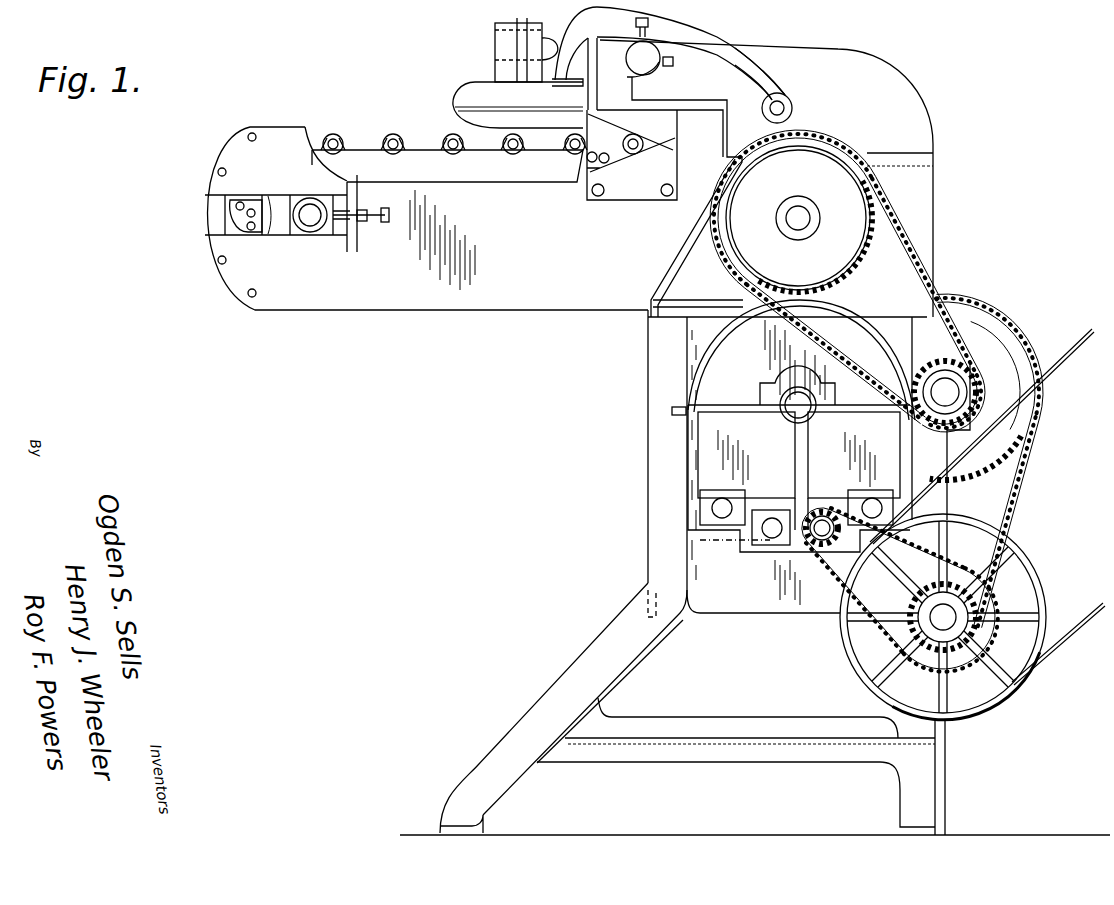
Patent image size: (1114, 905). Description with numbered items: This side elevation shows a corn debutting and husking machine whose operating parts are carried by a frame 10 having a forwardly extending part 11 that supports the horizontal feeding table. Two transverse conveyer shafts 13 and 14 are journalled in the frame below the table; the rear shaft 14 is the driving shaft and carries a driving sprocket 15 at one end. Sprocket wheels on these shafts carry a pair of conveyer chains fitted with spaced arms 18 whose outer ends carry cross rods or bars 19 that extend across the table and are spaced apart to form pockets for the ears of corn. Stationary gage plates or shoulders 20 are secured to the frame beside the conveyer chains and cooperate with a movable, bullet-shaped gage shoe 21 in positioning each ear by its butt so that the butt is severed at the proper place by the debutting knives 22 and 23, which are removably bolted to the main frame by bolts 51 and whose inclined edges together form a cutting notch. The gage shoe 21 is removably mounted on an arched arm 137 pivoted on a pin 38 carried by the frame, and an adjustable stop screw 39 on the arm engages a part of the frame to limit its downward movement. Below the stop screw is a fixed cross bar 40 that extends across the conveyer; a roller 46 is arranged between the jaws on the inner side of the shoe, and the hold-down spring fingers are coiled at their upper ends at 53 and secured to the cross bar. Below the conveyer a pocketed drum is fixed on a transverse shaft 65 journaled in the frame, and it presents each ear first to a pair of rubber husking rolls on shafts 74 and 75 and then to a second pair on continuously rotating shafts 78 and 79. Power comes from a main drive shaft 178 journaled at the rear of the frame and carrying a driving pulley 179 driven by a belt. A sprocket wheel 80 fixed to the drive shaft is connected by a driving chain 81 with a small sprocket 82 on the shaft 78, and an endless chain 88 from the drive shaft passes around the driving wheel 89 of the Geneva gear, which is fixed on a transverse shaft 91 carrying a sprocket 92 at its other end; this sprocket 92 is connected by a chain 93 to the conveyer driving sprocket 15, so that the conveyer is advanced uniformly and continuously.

The frame 10 is at (648, 357).
The forwardly extending part 11 is at (428, 218).
The conveyer shaft 13 is at (323, 226).
The conveyer shaft 14 is at (802, 217).
The driving sprocket 15 is at (799, 219).
The spaced arms 18 is at (450, 150).
The cross rods or bars 19 is at (455, 143).
The stationary gage plates 20 is at (447, 166).
The gage shoe 21 is at (518, 107).
The debutting knife 22 is at (632, 155).
The debutting knife 23 is at (631, 161).
The pin 38 is at (793, 108).
The stop screw 39 is at (652, 24).
The cross bar 40 is at (650, 63).
The roller 46 is at (558, 50).
The bolts 51 is at (662, 194).
The coil 53 is at (580, 30).
The transverse shaft 65 is at (806, 411).
The transverse shaft 74 is at (725, 498).
The transverse shaft 75 is at (774, 518).
The shaft 78 is at (820, 541).
The shaft 79 is at (862, 498).
The sprocket wheel 80 is at (905, 592).
The driving chain 81 is at (850, 582).
The small sprocket 82 is at (825, 512).
The endless chain 88 is at (1018, 480).
The driving wheel 89 is at (976, 401).
The transverse shaft 91 is at (957, 393).
The sprocket 92 is at (942, 366).
The chain 93 is at (870, 352).
The arm 137 is at (783, 70).
The main drive shaft 178 is at (938, 619).
The driving pulley 179 is at (868, 678).